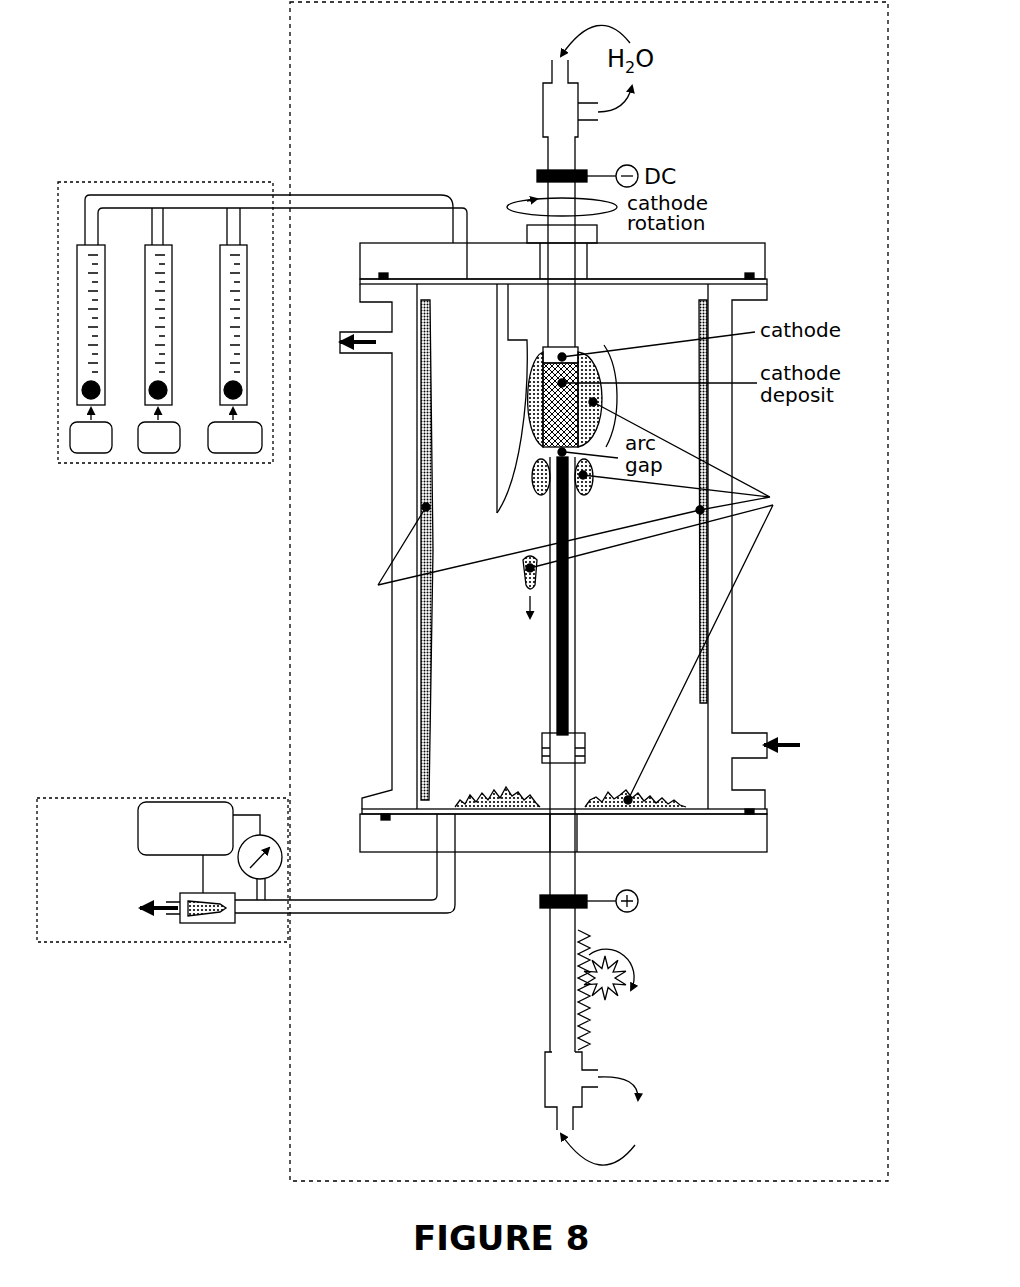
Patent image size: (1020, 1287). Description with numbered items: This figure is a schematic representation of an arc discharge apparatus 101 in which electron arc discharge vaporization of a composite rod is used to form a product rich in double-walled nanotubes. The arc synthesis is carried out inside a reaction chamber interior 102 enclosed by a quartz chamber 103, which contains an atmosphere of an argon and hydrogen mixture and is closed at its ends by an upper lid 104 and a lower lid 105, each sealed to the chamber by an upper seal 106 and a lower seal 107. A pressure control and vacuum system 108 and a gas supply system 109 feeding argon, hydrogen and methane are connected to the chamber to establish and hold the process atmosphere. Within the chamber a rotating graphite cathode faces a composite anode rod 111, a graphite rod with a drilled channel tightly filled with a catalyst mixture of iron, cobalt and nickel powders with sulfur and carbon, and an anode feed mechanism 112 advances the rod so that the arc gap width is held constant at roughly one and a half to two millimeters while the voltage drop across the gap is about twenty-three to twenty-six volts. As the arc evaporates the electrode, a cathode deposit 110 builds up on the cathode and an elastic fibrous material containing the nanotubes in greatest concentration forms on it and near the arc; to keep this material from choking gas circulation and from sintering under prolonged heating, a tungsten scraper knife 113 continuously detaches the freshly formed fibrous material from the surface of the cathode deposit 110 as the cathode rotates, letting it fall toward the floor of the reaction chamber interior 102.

The arc discharge apparatus 101 is at (589, 591).
The reaction chamber interior 102 is at (580, 546).
The quartz chamber 103 is at (735, 677).
The upper lid 104 is at (765, 242).
The lower lid 105 is at (765, 848).
The upper seal 106 is at (752, 278).
The lower seal 107 is at (760, 810).
The pressure control and vacuum system 108 is at (157, 942).
The gas supply system 109 is at (165, 182).
The cathode deposit 110 is at (616, 395).
The composite anode rod 111 is at (552, 640).
The anode feed mechanism 112 is at (612, 1005).
The knife 113 is at (510, 435).